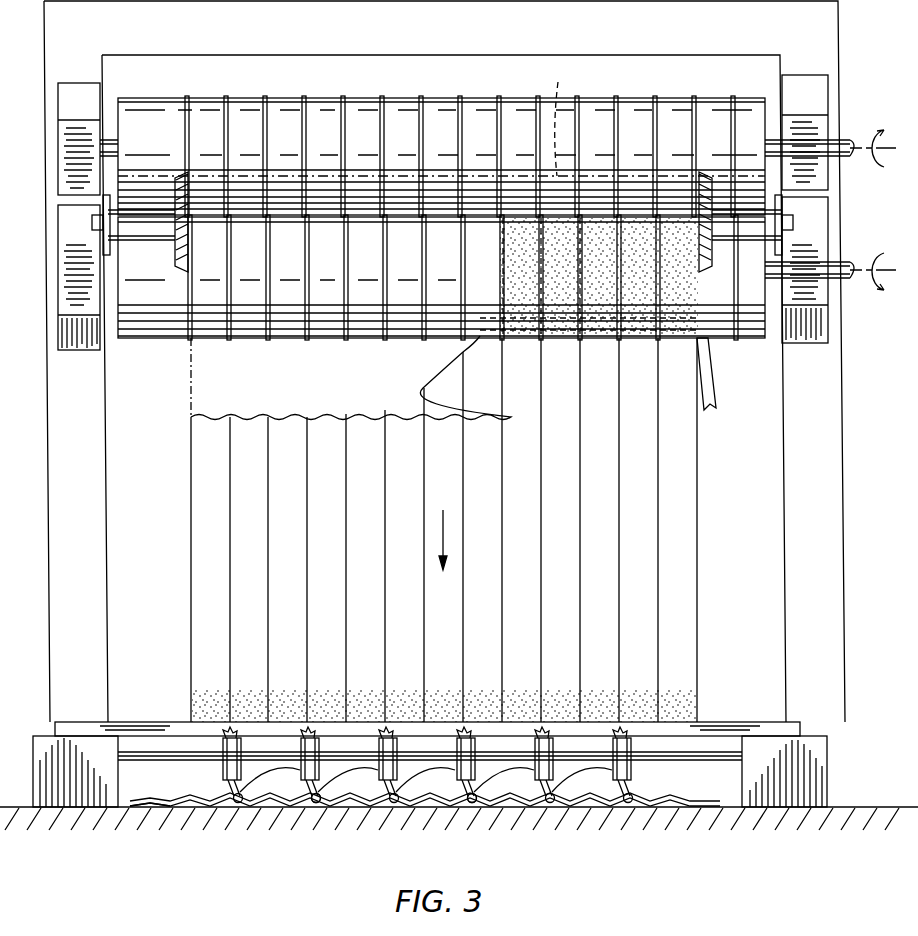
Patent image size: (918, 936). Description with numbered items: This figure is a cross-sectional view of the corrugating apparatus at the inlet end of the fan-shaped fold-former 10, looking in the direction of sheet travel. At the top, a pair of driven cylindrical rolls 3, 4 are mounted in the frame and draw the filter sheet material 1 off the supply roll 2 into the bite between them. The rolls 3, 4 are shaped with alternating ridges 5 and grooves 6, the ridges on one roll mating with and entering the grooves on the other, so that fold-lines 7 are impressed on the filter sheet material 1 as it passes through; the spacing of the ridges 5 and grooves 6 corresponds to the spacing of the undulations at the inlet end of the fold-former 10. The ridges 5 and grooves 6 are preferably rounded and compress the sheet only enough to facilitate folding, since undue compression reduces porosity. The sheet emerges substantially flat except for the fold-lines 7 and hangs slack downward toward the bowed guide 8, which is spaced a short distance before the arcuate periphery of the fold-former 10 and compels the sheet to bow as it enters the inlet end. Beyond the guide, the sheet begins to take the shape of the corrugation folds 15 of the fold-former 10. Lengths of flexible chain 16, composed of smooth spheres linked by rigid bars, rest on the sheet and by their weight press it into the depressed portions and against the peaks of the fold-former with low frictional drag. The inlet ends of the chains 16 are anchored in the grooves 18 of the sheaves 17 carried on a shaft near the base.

The filter sheet material 1 is at (696, 472).
The supply roll 2 is at (557, 176).
The driven cylindrical roll 3 is at (244, 100).
The driven cylindrical roll 4 is at (286, 340).
The ridges 5 is at (421, 97).
The grooves 6 is at (532, 97).
The fold-lines 7 is at (268, 568).
The bowed guide 8 is at (165, 764).
The fan-shaped fold-former 10 is at (212, 808).
The corrugation folds 15 is at (592, 810).
The lengths of flexible chain 16 is at (335, 800).
The sheaves 17 is at (250, 795).
The grooves 18 is at (390, 742).